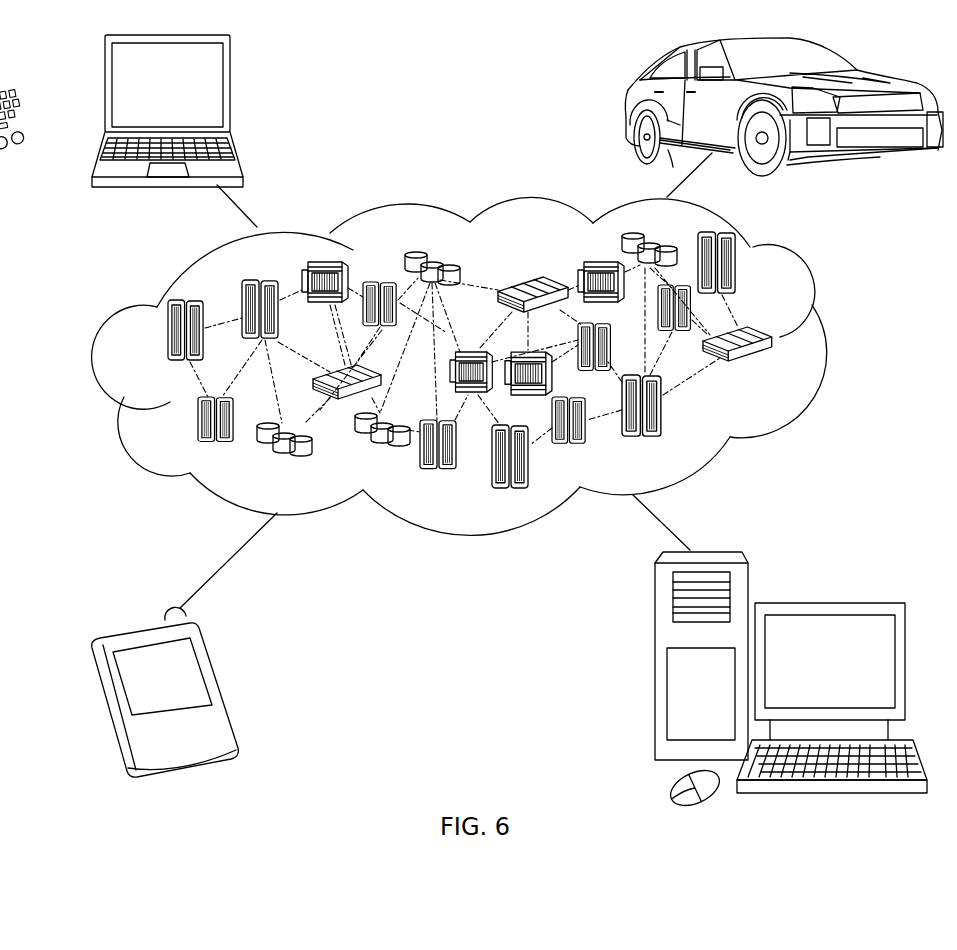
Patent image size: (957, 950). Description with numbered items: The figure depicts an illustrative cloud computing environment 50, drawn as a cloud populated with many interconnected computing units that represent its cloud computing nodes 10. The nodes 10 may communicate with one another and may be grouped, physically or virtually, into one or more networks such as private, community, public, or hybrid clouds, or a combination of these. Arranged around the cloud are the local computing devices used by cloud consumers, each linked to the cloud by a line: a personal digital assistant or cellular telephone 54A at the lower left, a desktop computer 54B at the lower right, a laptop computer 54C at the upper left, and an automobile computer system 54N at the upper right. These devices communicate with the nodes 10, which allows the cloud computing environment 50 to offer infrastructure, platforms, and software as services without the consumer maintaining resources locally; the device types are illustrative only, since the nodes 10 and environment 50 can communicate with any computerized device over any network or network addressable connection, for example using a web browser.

The cloud computing environment 50 is at (830, 342).
The cloud computing node 10 is at (782, 370).
The personal digital assistant or cellular telephone 54A is at (222, 687).
The desktop computer 54B is at (827, 600).
The laptop computer 54C is at (231, 92).
The automobile computer system 54N is at (628, 108).